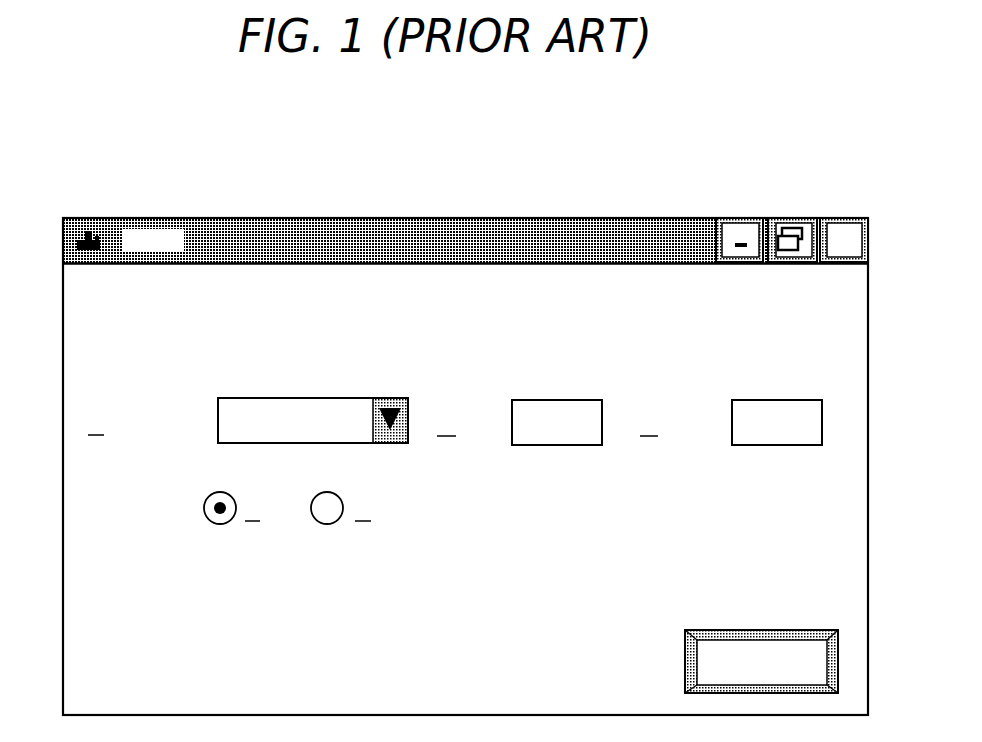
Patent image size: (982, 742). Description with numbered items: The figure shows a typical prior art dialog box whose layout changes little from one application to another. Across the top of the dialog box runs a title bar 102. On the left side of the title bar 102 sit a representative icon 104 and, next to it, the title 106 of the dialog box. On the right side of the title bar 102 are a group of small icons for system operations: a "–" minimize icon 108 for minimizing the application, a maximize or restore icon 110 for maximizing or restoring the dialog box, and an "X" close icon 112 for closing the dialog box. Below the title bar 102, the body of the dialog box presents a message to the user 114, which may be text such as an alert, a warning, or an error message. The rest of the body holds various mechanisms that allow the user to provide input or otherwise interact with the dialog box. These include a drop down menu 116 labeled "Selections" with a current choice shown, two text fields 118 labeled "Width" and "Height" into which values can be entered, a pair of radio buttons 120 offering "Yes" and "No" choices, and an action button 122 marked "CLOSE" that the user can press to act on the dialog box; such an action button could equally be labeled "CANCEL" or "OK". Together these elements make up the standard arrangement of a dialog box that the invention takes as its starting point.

The title bar 102 is at (430, 228).
The representative icon 104 is at (82, 225).
The title 106 is at (168, 228).
The minimize icon 108 is at (728, 230).
The maximize or restore icon 110 is at (777, 230).
The close icon 112 is at (830, 230).
The message to the user 114 is at (687, 312).
The drop down menu 116 is at (255, 398).
The text fields 118 is at (542, 446).
The radio buttons 120 is at (223, 524).
The action button 122 is at (727, 630).